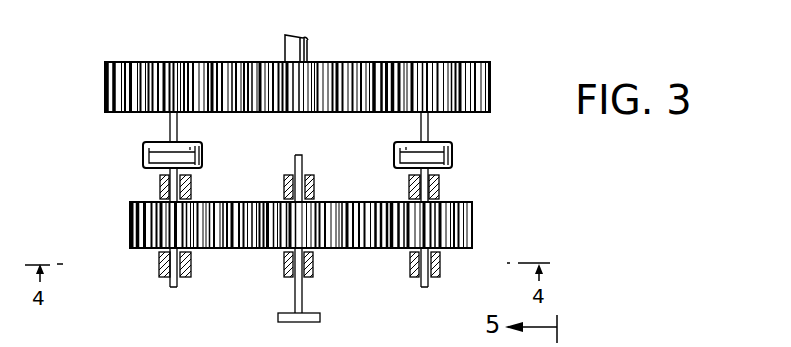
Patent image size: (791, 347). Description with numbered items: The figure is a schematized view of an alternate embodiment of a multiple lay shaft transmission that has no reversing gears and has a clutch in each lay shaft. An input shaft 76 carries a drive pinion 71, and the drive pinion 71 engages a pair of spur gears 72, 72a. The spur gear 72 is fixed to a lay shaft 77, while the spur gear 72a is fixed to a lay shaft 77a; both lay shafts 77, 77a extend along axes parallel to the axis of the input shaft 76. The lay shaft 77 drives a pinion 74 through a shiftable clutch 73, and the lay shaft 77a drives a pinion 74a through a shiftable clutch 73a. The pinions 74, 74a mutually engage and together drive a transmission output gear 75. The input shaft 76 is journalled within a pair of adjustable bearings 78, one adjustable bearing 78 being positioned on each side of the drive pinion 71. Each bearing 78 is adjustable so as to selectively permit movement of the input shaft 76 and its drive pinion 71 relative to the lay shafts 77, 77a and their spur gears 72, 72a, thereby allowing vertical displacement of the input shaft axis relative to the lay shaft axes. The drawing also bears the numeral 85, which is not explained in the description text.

The drive pinion 71 is at (253, 249).
The spur gear 72 is at (140, 229).
The spur gear 72a is at (473, 237).
The shiftable clutch 73 is at (145, 151).
The shiftable clutch 73a is at (452, 157).
The pinion 74 is at (153, 72).
The pinion 74a is at (415, 72).
The transmission output gear 75 is at (250, 72).
The input shaft 76 is at (292, 161).
The lay shaft 77 is at (172, 286).
The lay shaft 77a is at (431, 284).
The adjustable bearing 78 is at (312, 180).
The base 85 is at (605, 336).